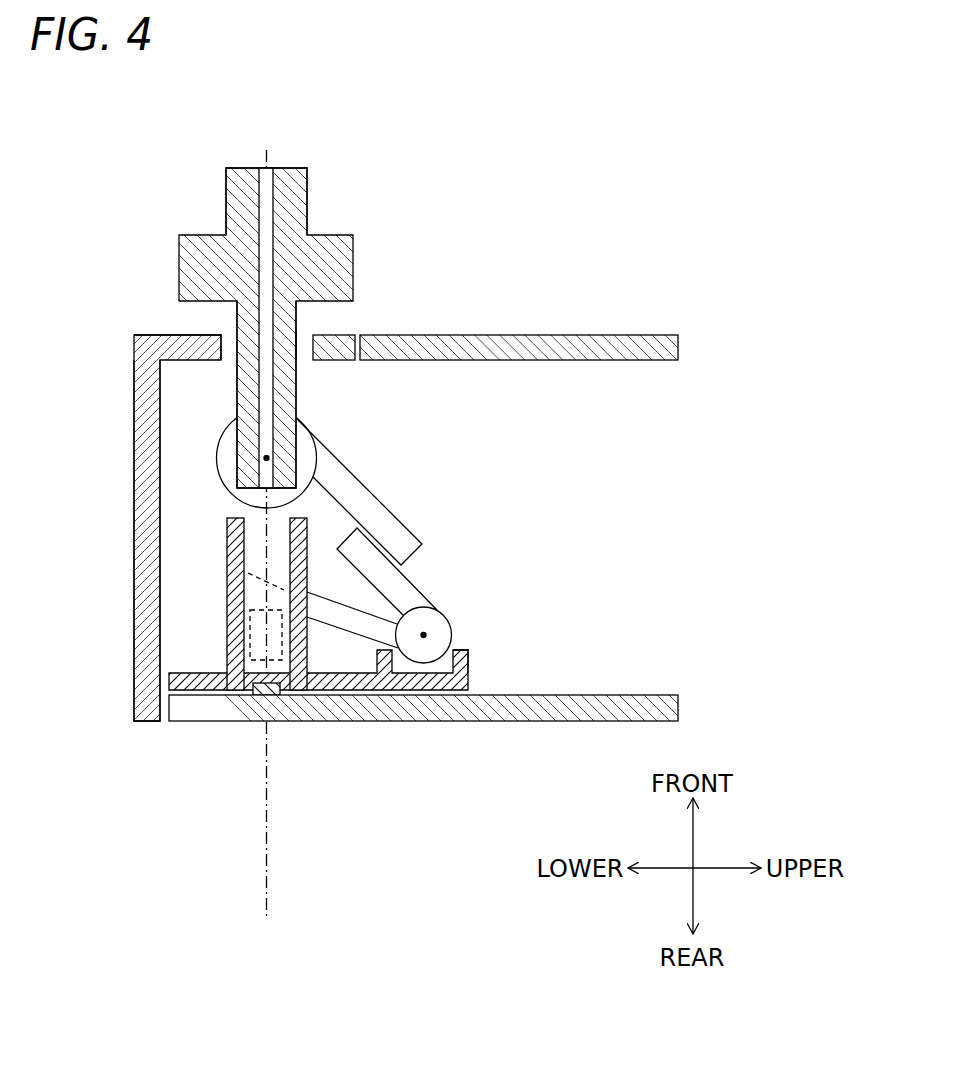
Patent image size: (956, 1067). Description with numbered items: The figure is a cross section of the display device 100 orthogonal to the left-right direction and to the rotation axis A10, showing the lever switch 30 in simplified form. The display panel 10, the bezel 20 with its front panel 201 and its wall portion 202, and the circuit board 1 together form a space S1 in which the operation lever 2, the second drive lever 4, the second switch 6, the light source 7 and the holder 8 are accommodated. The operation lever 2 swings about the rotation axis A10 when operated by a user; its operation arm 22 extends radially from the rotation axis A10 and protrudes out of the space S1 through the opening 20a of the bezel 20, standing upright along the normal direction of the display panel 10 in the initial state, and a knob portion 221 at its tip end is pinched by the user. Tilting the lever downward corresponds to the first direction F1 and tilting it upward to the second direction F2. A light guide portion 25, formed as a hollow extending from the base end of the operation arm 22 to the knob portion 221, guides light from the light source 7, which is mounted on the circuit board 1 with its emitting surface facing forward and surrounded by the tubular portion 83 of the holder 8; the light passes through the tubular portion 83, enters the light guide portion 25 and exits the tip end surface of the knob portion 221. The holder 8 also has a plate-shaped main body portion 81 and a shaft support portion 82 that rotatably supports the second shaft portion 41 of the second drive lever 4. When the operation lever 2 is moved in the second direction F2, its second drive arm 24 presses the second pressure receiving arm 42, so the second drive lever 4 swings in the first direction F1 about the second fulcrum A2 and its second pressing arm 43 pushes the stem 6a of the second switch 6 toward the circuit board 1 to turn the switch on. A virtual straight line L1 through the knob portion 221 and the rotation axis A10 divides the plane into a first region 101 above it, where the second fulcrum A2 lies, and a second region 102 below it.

The circuit board 1 is at (540, 722).
The operation lever 2 is at (357, 234).
The second drive lever 4 is at (464, 619).
The second switch 6 is at (232, 662).
The stem 6a is at (250, 625).
The light source 7 is at (251, 697).
The holder 8 is at (190, 696).
The display panel 10 is at (610, 332).
The bezel 20 is at (131, 334).
The opening 20a is at (294, 327).
The operation arm 22 is at (236, 378).
The second drive arm 24 is at (365, 480).
The light guide portion 25 is at (275, 276).
The lever switch 30 is at (376, 260).
The second shaft portion 41 is at (448, 618).
The second pressure receiving arm 42 is at (422, 577).
The second pressing arm 43 is at (329, 627).
The main body portion 81 is at (341, 645).
The shaft support portion 82 is at (446, 662).
The tubular portion 83 is at (227, 558).
The display device 100 is at (585, 161).
The first region 101 is at (302, 912).
The second region 102 is at (193, 912).
The front panel 201 is at (170, 333).
The side wall portion 202 is at (133, 483).
The knob portion 221 is at (225, 200).
The rotation axis A10 is at (266, 458).
The second fulcrum A2 is at (423, 638).
The space S1 is at (605, 423).
The virtual straight line L1 is at (265, 553).
The first direction F1 is at (354, 122).
The second direction F2 is at (383, 125).